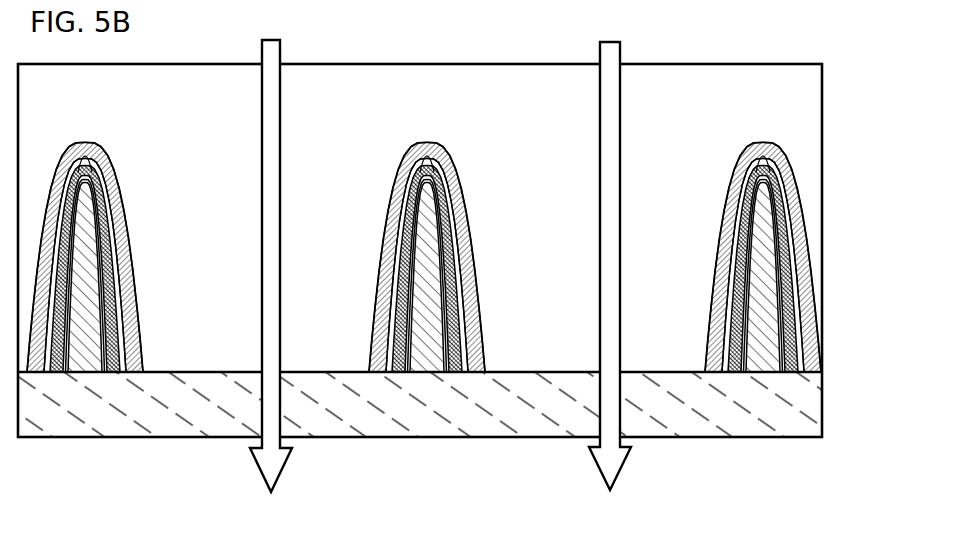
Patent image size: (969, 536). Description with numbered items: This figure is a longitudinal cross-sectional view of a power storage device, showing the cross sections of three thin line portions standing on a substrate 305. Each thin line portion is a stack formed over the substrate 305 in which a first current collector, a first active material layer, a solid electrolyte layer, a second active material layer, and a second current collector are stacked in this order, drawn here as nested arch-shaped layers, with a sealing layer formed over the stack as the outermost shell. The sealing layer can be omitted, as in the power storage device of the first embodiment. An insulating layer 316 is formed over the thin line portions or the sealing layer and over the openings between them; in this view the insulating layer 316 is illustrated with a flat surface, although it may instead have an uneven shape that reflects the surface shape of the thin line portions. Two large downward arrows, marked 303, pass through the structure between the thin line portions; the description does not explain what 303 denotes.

The gas flow arrow 303 is at (275, 104).
The substrate 305 is at (190, 378).
The insulating layer 316 is at (80, 108).